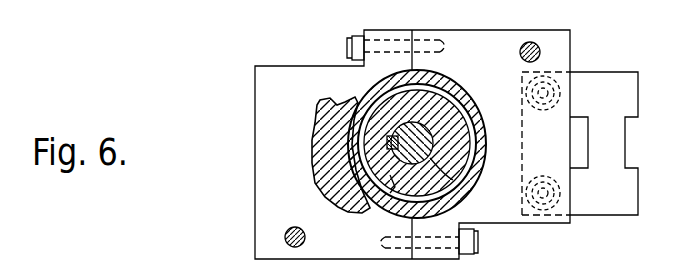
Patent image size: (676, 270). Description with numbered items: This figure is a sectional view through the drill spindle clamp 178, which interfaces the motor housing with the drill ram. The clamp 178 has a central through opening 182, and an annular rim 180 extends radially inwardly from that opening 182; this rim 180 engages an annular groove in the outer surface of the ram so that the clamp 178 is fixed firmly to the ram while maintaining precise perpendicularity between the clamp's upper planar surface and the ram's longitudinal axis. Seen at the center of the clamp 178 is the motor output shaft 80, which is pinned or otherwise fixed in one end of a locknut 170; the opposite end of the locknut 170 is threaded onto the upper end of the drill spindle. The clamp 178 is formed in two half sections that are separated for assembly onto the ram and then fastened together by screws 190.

The motor output shaft 80 is at (458, 180).
The locknut 170 is at (385, 204).
The drill spindle clamp 178 is at (267, 184).
The annular rim 180 is at (388, 92).
The central through opening 182 is at (348, 126).
The screws 190 is at (346, 44).